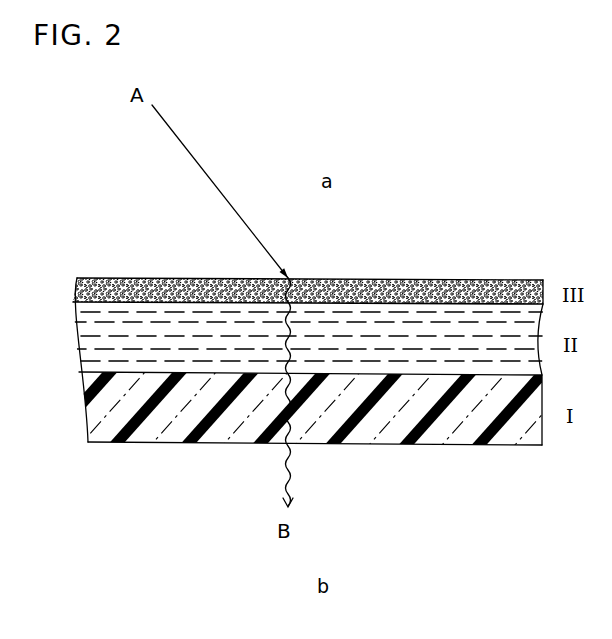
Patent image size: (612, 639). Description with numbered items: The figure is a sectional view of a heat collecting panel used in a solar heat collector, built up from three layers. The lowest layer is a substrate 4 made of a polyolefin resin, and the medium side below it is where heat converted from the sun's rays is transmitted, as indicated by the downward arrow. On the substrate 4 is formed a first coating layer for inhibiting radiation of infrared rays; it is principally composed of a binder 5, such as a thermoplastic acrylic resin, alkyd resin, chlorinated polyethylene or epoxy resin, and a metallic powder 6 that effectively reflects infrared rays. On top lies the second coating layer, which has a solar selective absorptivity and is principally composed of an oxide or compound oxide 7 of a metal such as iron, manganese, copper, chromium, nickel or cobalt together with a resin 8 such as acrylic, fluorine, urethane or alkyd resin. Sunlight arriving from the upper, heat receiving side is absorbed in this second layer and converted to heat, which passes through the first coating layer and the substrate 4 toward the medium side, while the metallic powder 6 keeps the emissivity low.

The substrate 4 is at (398, 433).
The binder 5 is at (90, 343).
The metallic powder 6 is at (90, 312).
The oxide or compound oxide 7 is at (72, 300).
The resin 8 is at (76, 283).